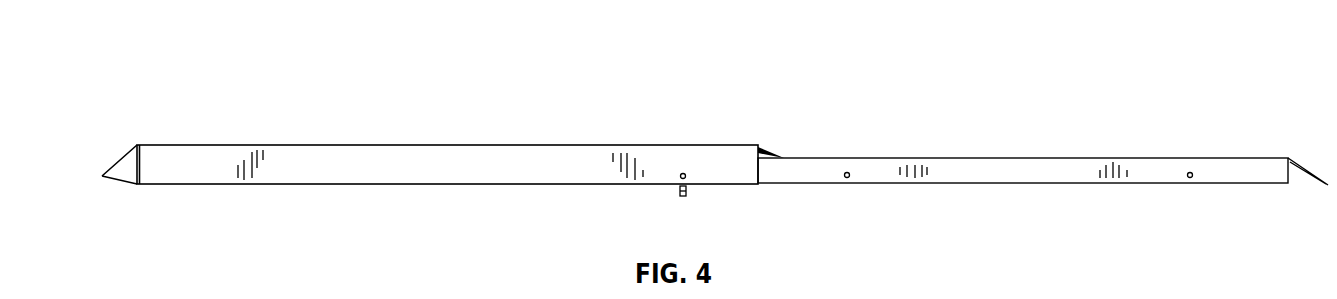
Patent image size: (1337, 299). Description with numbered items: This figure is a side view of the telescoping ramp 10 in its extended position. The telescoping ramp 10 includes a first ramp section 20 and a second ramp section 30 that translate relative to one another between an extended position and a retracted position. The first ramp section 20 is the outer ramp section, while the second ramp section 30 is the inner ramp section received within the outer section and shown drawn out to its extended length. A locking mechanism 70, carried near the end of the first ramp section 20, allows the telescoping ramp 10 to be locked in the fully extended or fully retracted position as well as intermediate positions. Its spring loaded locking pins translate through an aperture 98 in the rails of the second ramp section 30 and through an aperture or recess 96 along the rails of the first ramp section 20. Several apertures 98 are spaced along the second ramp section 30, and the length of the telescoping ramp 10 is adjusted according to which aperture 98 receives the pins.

The telescoping ramp 10 is at (1021, 55).
The first ramp section 20 is at (355, 160).
The second ramp section 30 is at (985, 172).
The locking mechanism 70 is at (683, 152).
The aperture or recess 96 is at (684, 178).
The aperture 98 is at (848, 173).